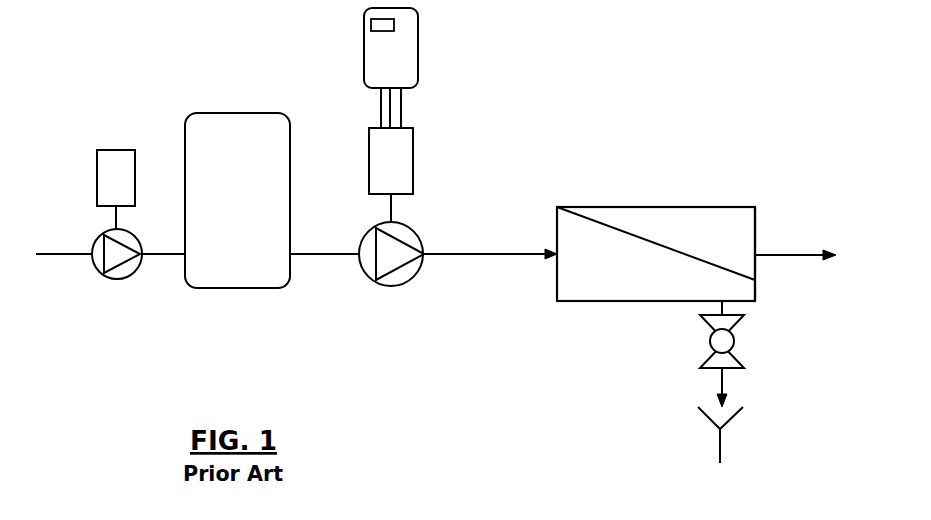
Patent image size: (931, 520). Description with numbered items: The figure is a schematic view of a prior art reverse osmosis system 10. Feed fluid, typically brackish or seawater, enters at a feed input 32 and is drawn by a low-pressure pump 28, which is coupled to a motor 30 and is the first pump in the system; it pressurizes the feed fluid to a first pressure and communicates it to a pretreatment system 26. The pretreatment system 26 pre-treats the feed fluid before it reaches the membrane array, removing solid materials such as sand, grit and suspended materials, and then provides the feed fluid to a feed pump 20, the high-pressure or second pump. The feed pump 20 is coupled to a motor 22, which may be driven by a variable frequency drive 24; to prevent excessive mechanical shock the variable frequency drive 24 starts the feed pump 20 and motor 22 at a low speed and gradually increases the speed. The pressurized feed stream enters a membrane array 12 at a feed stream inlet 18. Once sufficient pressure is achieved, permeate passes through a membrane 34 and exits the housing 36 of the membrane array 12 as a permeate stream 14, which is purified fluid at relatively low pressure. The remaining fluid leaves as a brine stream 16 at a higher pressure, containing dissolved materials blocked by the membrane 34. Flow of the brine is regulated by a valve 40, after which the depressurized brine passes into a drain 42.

The reverse osmosis system 10 is at (139, 50).
The membrane array 12 is at (648, 207).
The permeate stream 14 is at (795, 258).
The brine stream 16 is at (713, 311).
The feed stream inlet 18 is at (484, 252).
The feed pump 20 is at (392, 287).
The motor 22 is at (413, 152).
The variable frequency drive 24 is at (418, 36).
The pretreatment system 26 is at (233, 113).
The low-pressure pump 28 is at (115, 280).
The motor 30 is at (115, 150).
The feed input 32 is at (49, 253).
The membrane 34 is at (683, 251).
The housing 36 is at (757, 207).
The valve 40 is at (738, 355).
The drain 42 is at (739, 413).